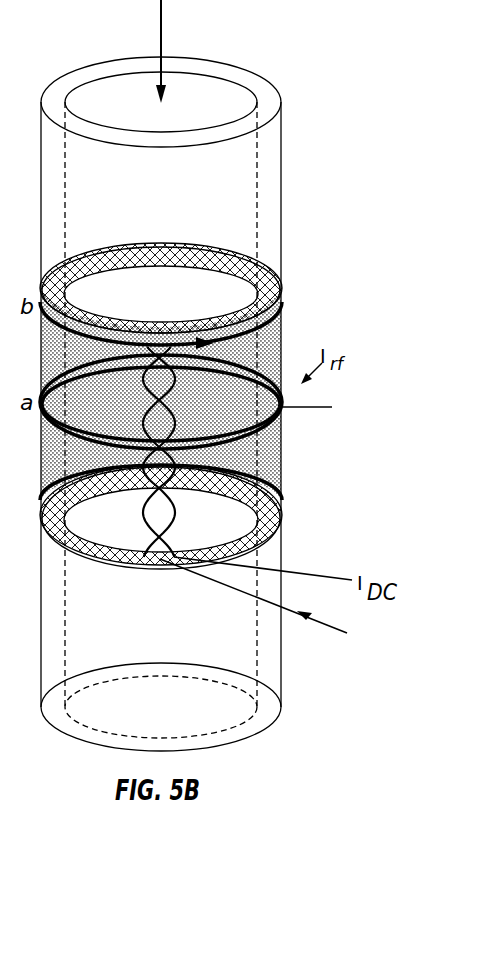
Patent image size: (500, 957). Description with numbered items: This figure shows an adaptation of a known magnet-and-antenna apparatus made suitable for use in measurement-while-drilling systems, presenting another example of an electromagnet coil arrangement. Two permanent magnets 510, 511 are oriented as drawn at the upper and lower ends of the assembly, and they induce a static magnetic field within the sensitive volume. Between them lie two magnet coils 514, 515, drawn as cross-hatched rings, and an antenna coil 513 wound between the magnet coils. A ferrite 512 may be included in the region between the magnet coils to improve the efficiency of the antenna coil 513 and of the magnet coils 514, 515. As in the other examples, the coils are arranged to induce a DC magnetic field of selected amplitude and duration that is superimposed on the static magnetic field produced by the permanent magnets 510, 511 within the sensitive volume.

The permanent magnet 510 is at (283, 131).
The permanent magnet 511 is at (281, 559).
The ferrite 512 is at (263, 355).
The antenna coil 513 is at (283, 407).
The magnet coil 514 is at (283, 291).
The magnet coil 515 is at (280, 522).